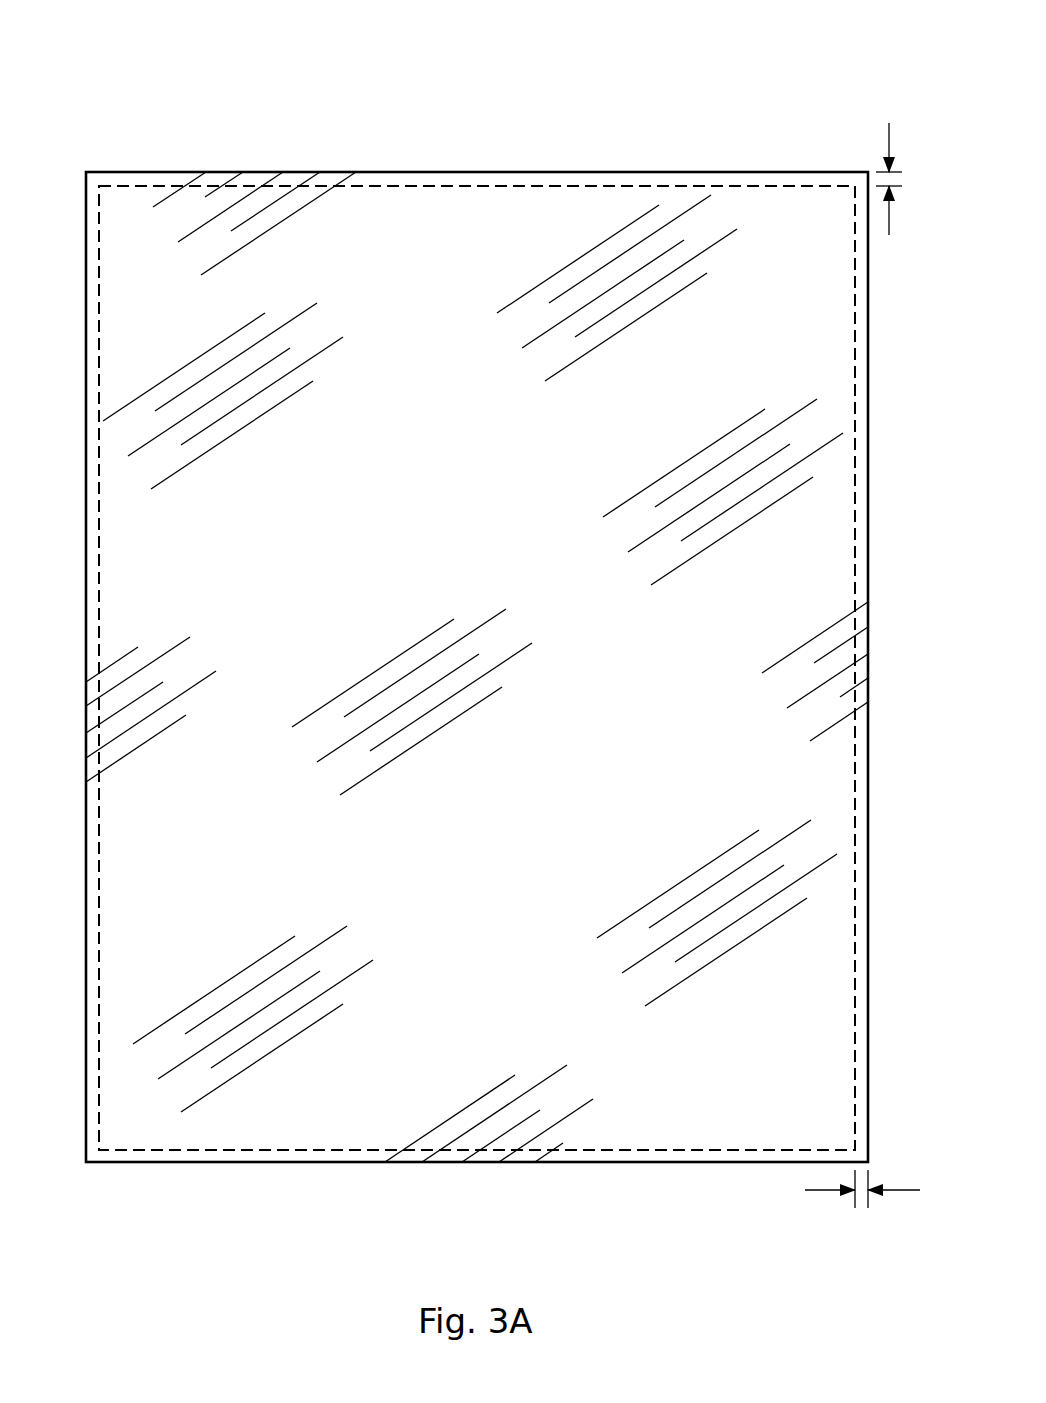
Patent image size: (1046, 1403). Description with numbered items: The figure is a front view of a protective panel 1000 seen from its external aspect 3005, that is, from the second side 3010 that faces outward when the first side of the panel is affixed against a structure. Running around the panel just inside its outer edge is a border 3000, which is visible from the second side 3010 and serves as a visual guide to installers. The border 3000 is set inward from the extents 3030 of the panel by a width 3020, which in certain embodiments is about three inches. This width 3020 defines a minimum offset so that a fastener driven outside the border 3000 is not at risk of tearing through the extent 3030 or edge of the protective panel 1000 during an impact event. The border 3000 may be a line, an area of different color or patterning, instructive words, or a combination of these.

The protective panel 1000 is at (672, 97).
The border 3000 is at (533, 172).
The external aspect 3005 is at (195, 1112).
The second side 3010 is at (172, 342).
The width 3020 is at (913, 145).
The extents 3030 is at (358, 170).